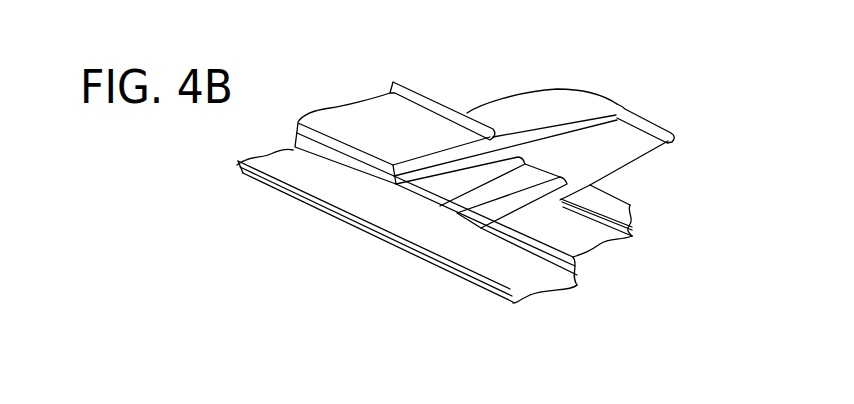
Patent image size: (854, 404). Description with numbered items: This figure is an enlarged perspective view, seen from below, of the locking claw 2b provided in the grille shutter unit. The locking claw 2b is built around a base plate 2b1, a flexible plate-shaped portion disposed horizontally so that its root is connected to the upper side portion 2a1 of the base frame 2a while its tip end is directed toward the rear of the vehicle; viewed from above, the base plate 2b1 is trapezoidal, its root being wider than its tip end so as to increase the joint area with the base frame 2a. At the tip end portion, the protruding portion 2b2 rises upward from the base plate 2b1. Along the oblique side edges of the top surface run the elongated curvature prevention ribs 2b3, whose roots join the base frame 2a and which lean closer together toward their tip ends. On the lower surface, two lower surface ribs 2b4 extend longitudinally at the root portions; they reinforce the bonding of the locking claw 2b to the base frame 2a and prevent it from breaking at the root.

The base frame 2a is at (318, 206).
The upper side portion 2a1 is at (398, 233).
The locking claw 2b is at (660, 106).
The base plate 2b1 is at (637, 150).
The protruding portion 2b2 is at (563, 90).
The curvature prevention ribs 2b3 is at (510, 102).
The lower surface ribs 2b4 is at (477, 193).